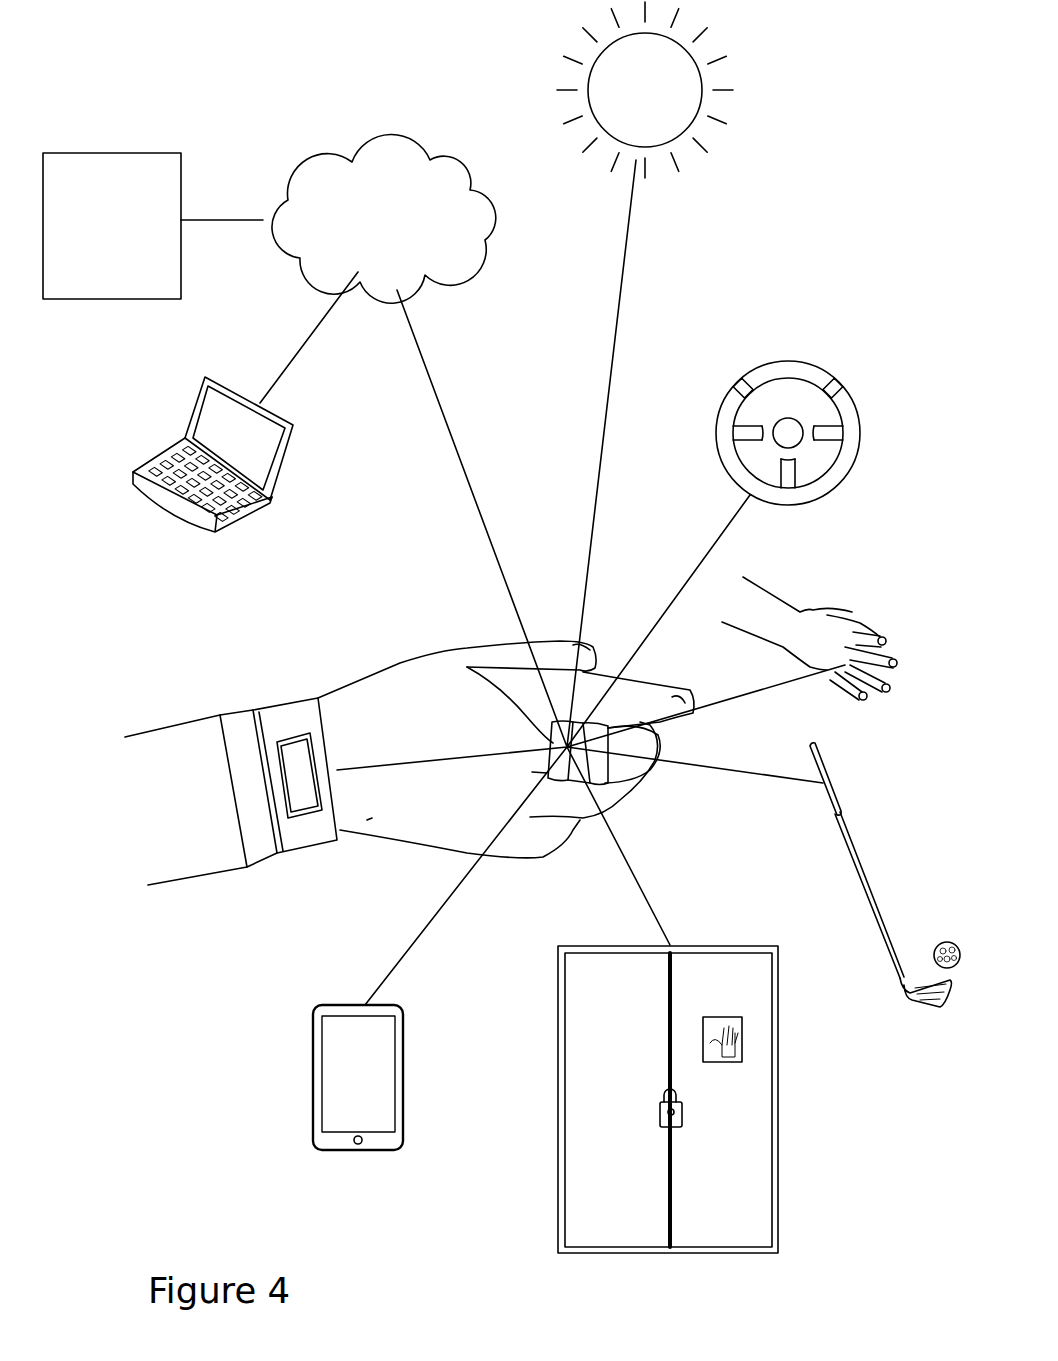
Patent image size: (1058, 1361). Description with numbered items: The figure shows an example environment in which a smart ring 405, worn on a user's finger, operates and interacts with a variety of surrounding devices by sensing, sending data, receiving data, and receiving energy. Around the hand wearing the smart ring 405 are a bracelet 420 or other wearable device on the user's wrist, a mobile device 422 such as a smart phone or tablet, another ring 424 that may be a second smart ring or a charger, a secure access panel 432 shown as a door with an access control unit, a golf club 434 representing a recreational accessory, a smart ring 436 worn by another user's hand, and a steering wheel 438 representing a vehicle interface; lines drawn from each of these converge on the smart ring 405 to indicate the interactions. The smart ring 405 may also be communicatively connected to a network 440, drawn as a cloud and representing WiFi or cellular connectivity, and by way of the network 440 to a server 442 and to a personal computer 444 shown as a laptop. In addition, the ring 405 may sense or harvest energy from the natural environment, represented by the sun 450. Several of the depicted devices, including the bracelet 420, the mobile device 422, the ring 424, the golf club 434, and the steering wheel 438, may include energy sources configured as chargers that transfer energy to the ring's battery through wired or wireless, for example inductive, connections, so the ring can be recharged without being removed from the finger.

The smart ring 405 is at (558, 727).
The bracelet 420 is at (336, 735).
The mobile device 422 is at (403, 1053).
The another ring 424 is at (605, 771).
The secure access panel 432 is at (742, 1040).
The golf club 434 is at (862, 855).
The smart ring worn by another user 436 is at (867, 628).
The steering wheel 438 is at (796, 362).
The network 440 is at (391, 135).
The server 442 is at (130, 152).
The personal computer 444 is at (170, 513).
The sun 450 is at (700, 72).